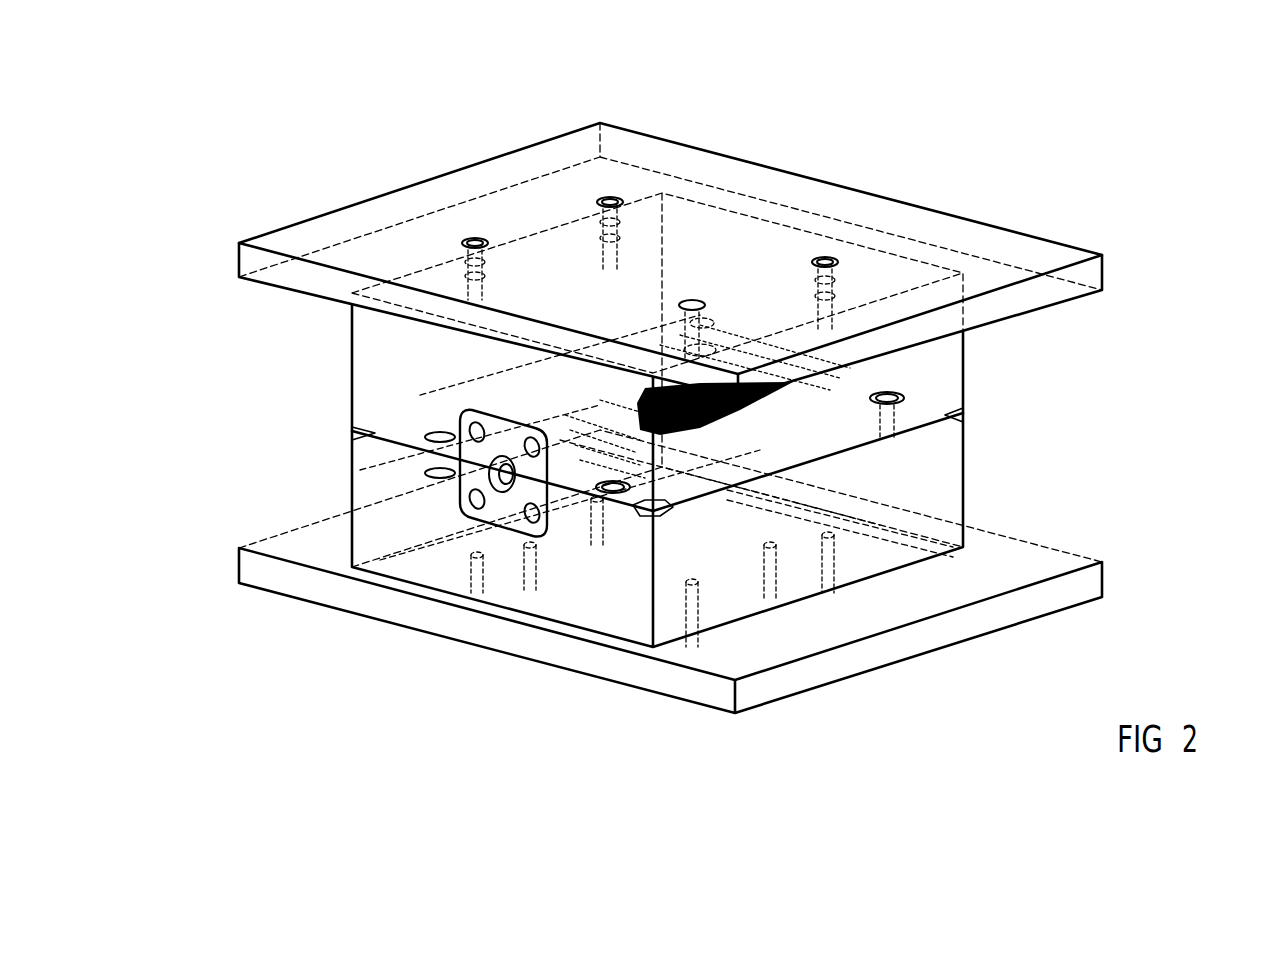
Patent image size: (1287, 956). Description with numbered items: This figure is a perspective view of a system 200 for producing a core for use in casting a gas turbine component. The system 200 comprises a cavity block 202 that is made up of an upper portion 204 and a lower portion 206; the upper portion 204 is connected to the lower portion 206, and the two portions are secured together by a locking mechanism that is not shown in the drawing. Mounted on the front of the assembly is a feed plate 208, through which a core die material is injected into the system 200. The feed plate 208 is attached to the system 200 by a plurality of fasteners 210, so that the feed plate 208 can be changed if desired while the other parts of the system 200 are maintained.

The system for producing a core 200 is at (393, 96).
The cavity block 202 is at (1237, 290).
The upper portion 204 is at (372, 425).
The lower portion 206 is at (213, 438).
The feed plate 208 is at (500, 510).
The fasteners 210 is at (532, 515).